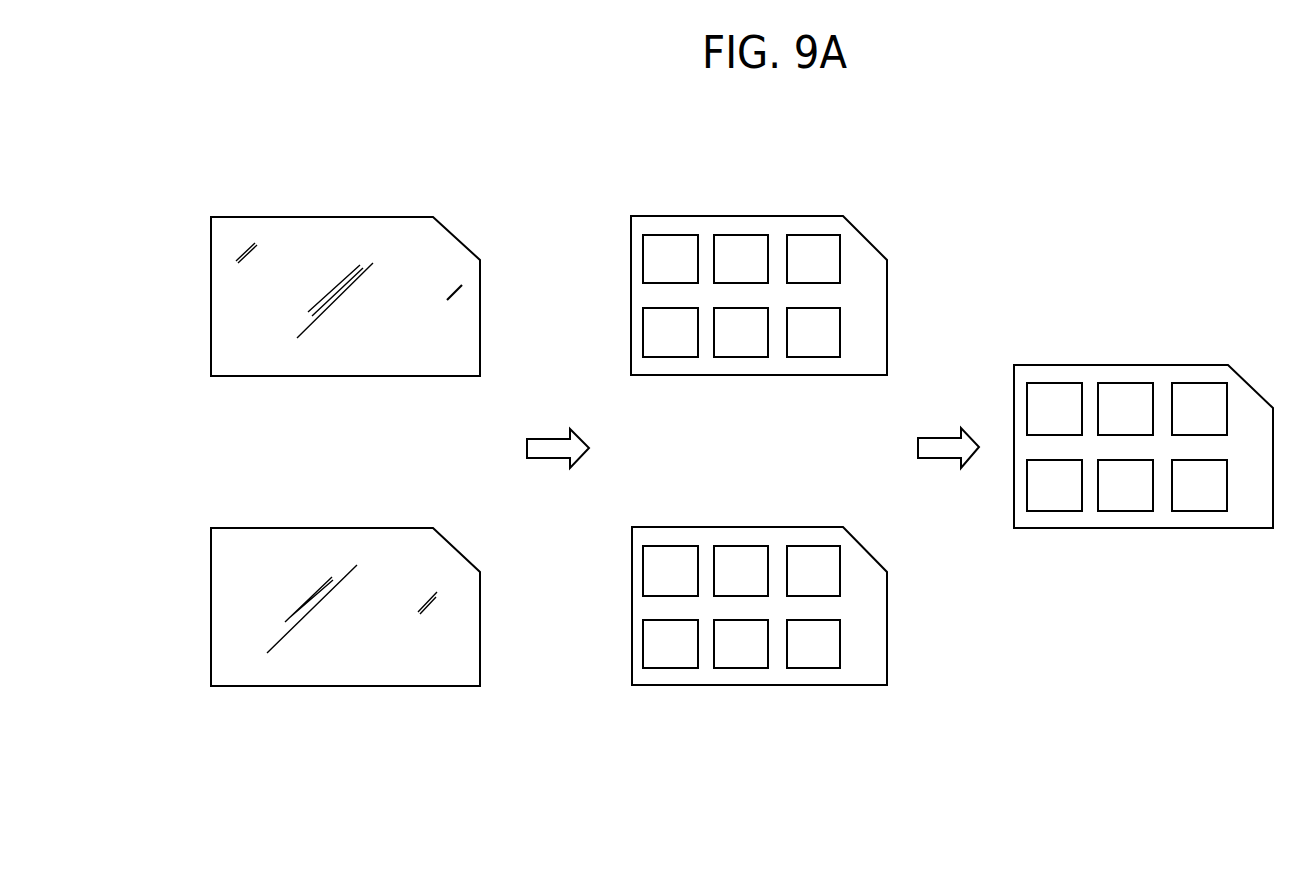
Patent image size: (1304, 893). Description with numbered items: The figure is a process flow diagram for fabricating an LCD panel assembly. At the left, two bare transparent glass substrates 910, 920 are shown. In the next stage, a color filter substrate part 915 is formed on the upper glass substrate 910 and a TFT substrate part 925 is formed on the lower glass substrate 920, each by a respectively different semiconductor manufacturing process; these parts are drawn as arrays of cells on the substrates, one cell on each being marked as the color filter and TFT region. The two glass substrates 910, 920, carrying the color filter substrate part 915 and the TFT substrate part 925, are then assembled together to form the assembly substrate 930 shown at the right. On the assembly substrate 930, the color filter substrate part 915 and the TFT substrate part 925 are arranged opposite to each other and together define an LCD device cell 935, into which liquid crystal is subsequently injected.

The glass substrate 910 is at (355, 232).
The color filter substrate part 915 is at (813, 238).
The glass substrate 920 is at (405, 677).
The TFT substrate part 925 is at (810, 553).
The assembly substrate 930 is at (1208, 340).
The LCD device cell 935 is at (1058, 392).